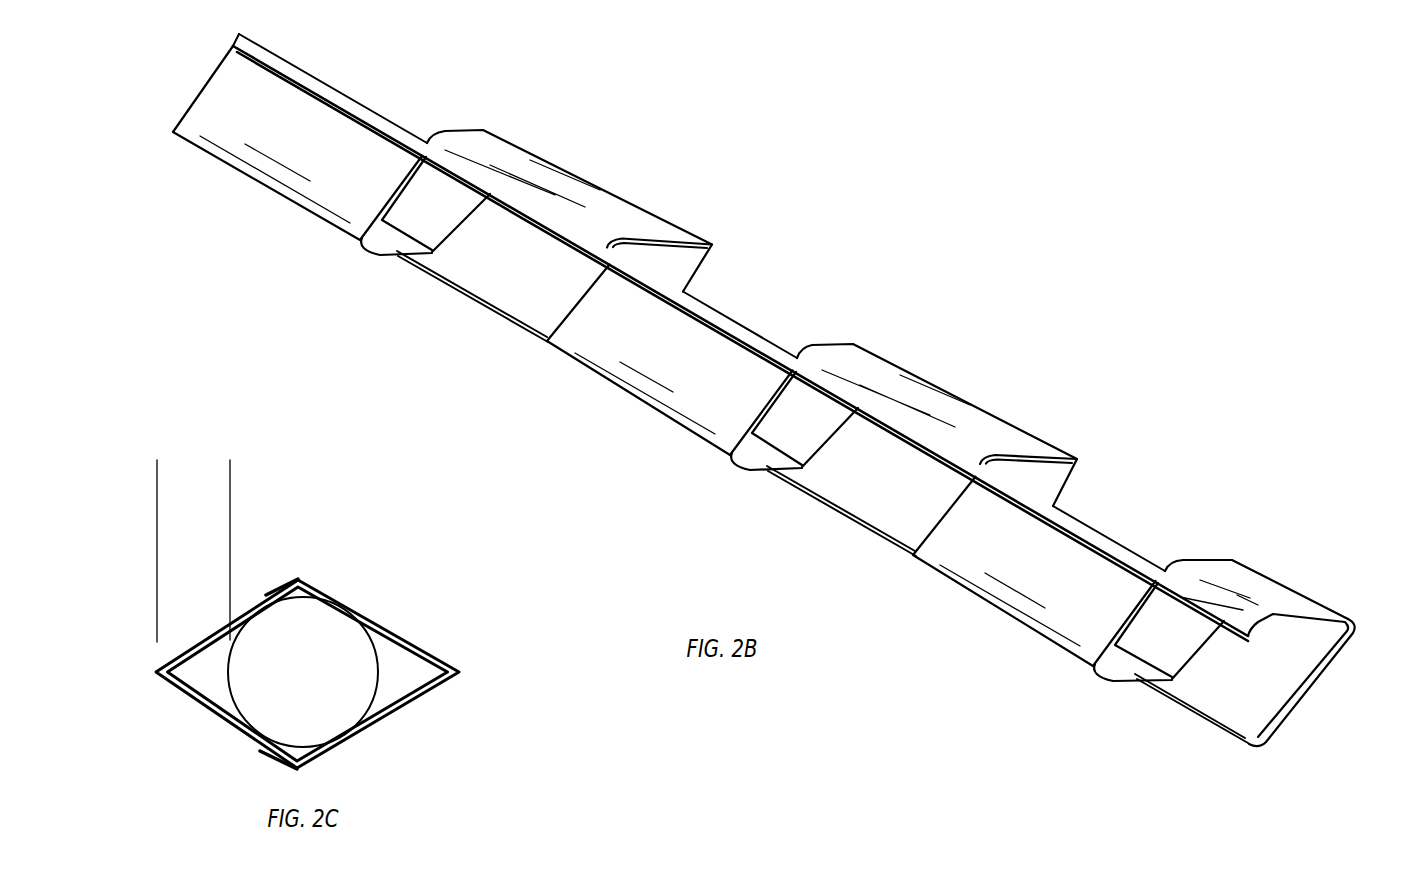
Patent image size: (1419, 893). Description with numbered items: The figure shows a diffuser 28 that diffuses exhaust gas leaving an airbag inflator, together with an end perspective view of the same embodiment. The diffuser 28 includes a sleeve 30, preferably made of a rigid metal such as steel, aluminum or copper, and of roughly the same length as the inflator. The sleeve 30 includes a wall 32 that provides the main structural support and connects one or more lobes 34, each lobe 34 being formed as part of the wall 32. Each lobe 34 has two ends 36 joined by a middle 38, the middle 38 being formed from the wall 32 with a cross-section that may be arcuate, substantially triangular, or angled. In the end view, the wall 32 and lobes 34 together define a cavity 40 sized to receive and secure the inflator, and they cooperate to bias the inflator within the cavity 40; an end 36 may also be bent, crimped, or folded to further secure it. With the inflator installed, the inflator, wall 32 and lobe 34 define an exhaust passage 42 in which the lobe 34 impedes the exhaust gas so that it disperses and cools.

In FIG. 2B, the diffuser 28 is at (1105, 210).
In FIG. 2B, the sleeve 30 is at (935, 288).
In FIG. 2B, the wall 32 is at (762, 352).
In FIG. 2C, the wall 32 is at (268, 590).
In FIG. 2B, the lobe 34 is at (617, 170).
In FIG. 2C, the lobe 34 is at (370, 592).
In FIG. 2B, the end 36 is at (497, 127).
In FIG. 2B, the middle 38 is at (287, 157).
In FIG. 2C, the cavity 40 is at (293, 685).
In FIG. 2C, the exhaust passage 42 is at (227, 480).